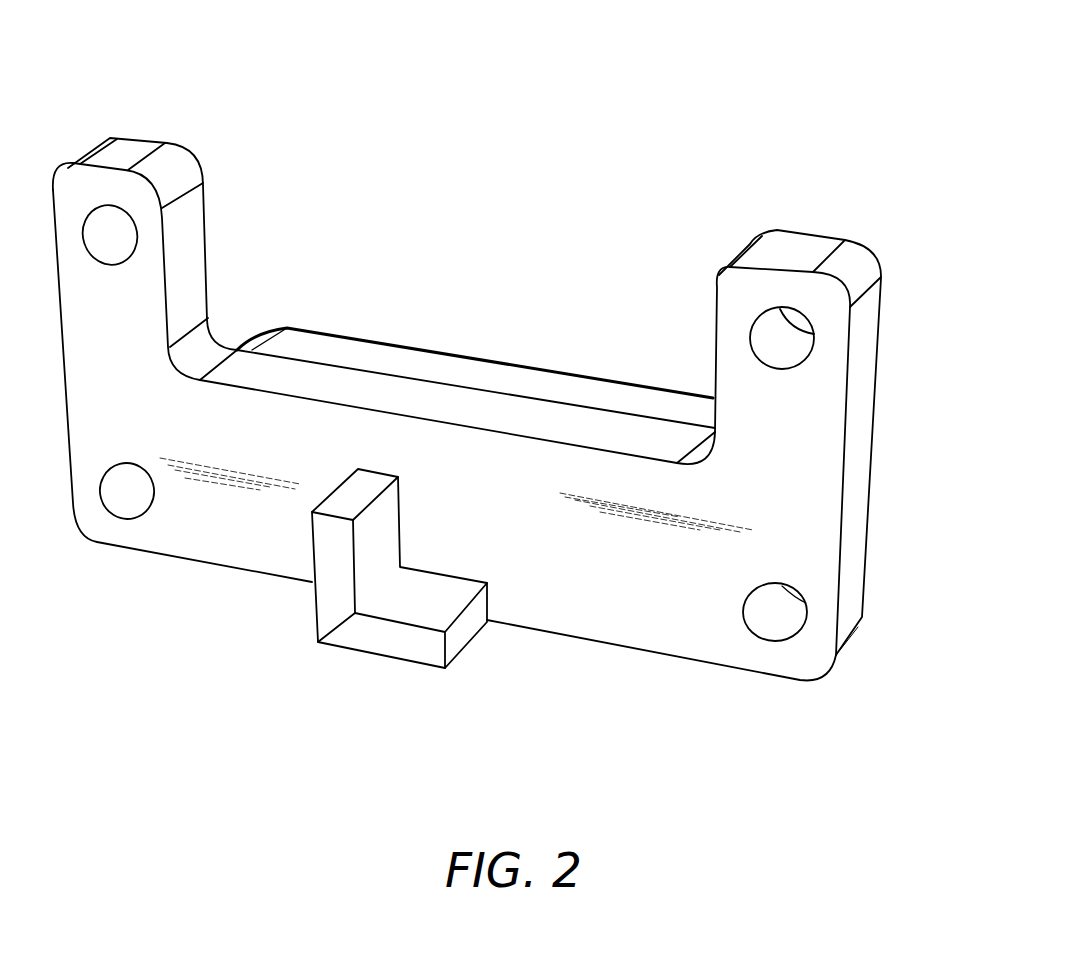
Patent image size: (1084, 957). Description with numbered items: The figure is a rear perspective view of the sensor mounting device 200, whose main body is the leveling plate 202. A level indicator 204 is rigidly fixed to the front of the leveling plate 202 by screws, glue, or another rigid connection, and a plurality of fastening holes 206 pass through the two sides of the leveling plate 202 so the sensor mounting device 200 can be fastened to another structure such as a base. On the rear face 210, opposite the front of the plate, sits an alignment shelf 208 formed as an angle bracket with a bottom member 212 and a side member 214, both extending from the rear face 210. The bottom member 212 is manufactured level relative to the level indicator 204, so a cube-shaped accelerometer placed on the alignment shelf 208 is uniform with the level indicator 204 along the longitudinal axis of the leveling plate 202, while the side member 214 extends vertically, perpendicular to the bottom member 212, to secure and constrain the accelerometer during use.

The sensor mounting device 200 is at (772, 152).
The leveling plate 202 is at (857, 447).
The level indicator 204 is at (415, 367).
The fastening holes 206 is at (787, 622).
The alignment shelf 208 is at (393, 603).
The rear face 210 is at (817, 533).
The bottom member 212 is at (432, 600).
The side member 214 is at (323, 543).